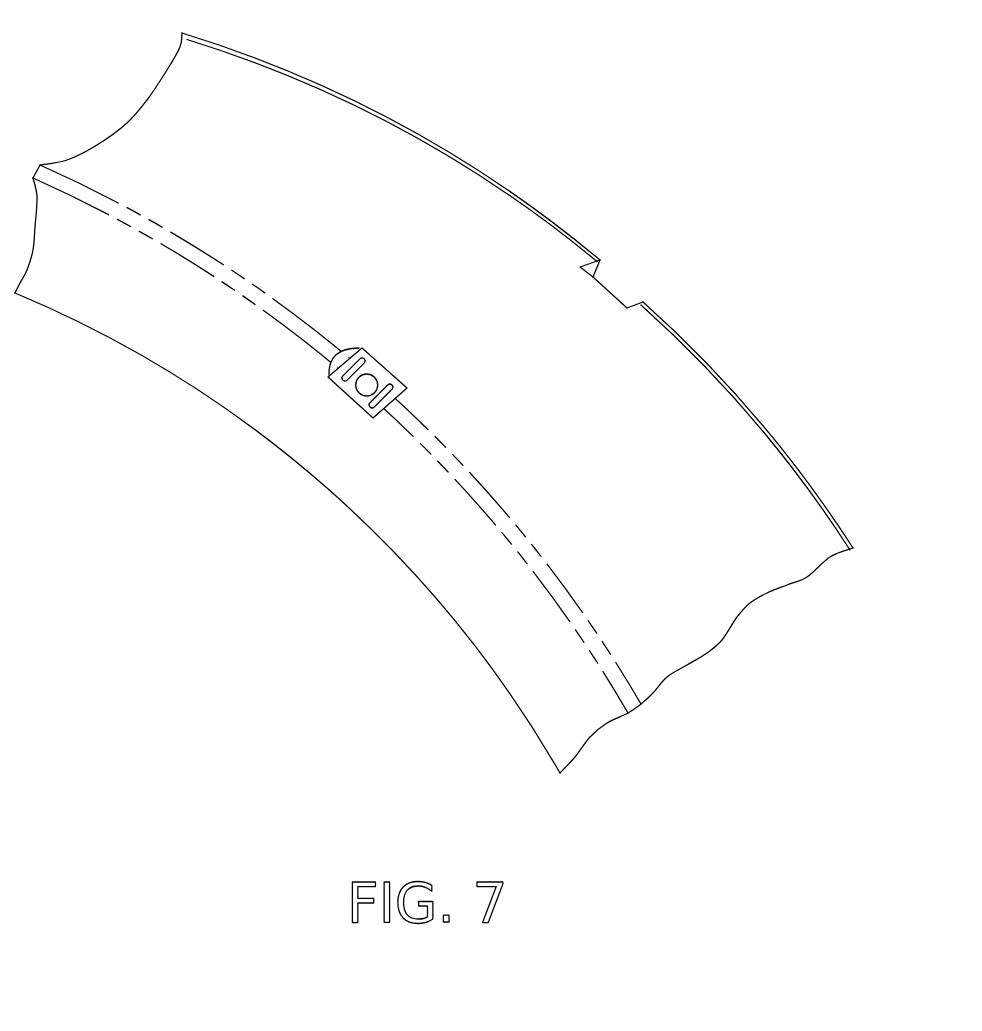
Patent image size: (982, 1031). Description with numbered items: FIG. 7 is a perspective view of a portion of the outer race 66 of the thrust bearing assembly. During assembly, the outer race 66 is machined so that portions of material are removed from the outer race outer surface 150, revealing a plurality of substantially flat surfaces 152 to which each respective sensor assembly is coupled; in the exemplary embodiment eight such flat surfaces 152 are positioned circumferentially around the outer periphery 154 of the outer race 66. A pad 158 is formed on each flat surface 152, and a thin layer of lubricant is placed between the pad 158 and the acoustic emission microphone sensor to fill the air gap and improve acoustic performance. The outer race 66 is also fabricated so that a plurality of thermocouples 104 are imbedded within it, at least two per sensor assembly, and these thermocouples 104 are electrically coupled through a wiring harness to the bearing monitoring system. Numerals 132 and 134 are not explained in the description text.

The outer race 66 is at (448, 420).
The thermocouples 104 is at (330, 382).
The anvil rail 132 is at (458, 180).
The body of staple cartridge 134 is at (130, 318).
The outer race outer surface 150 is at (747, 452).
The flat surfaces 152 is at (613, 292).
The outer periphery 154 is at (368, 105).
The pad 158 is at (374, 417).